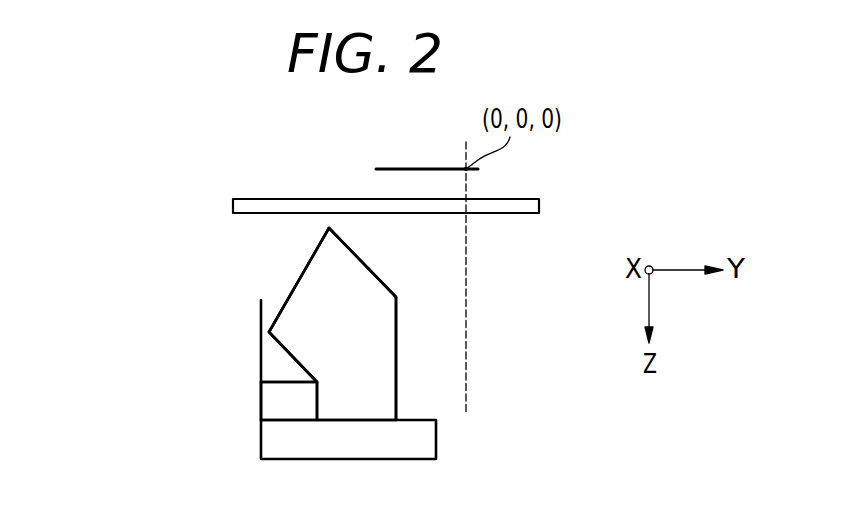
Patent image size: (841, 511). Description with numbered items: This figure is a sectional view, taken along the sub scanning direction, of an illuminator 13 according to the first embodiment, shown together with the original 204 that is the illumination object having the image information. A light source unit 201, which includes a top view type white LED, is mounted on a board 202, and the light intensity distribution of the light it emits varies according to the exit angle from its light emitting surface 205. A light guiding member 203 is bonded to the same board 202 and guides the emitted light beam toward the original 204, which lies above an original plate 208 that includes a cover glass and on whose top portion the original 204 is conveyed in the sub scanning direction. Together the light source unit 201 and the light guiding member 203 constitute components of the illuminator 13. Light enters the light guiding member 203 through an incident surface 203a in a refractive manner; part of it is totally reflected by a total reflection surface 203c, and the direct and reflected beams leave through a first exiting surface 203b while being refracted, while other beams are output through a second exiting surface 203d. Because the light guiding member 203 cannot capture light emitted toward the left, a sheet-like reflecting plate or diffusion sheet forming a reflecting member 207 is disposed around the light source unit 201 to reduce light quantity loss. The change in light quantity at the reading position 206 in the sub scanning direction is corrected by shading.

The illuminator 13 is at (130, 288).
The light source unit 201 is at (268, 400).
The board 202 is at (436, 434).
The light guiding member 203 is at (375, 363).
The incident surface 203a is at (282, 345).
The first exiting surface 203b is at (373, 270).
The total reflection surface 203c is at (302, 273).
The second exiting surface 203d is at (397, 312).
The original 204 is at (395, 166).
The light emitting surface 205 is at (287, 382).
The reading position 206 is at (466, 170).
The reflecting member 207 is at (261, 362).
The original plate 208 is at (539, 204).